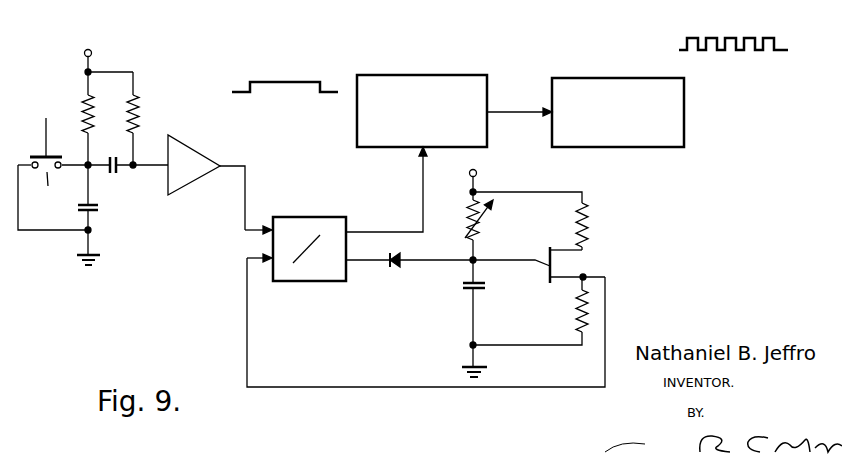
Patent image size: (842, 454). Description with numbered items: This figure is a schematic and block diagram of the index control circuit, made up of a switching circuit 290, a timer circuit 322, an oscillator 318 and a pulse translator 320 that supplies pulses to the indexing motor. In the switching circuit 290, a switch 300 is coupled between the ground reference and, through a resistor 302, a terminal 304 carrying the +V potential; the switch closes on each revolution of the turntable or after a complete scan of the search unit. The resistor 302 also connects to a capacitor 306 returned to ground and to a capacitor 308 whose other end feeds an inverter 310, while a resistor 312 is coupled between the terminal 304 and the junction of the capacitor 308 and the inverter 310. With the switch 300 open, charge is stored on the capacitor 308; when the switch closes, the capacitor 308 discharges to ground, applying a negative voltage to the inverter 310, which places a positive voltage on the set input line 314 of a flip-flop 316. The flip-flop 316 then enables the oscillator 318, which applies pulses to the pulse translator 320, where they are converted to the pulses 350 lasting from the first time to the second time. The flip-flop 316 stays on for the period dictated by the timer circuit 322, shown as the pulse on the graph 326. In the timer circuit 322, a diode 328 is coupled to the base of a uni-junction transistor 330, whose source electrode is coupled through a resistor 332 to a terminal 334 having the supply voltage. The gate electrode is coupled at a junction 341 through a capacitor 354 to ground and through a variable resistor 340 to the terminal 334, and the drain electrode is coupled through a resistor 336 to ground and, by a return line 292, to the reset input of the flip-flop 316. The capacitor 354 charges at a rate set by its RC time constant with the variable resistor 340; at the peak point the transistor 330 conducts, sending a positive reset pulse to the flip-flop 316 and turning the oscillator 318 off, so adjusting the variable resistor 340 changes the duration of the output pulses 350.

The switching circuit 290 is at (57, 260).
The feedback circuit 292 is at (550, 402).
The switch 300 is at (53, 174).
The resistor 302 is at (84, 112).
The terminal 304 is at (92, 51).
The capacitor 306 is at (93, 212).
The capacitor 308 is at (117, 171).
The inverter 310 is at (188, 180).
The resistor 312 is at (137, 112).
The set input line 314 is at (247, 208).
The flip-flop 316 is at (337, 220).
The oscillator 318 is at (435, 73).
The pulse translator 320 is at (678, 130).
The timer circuit 322 is at (453, 328).
The graph 326 is at (283, 80).
The diode 328 is at (398, 268).
The uni-junction transistor 330 is at (567, 263).
The resistor 332 is at (588, 218).
The terminal 334 is at (477, 173).
The resistor 336 is at (592, 305).
The variable resistor 340 is at (496, 241).
The junction 341 is at (471, 257).
The pulses 350 is at (745, 38).
The capacitor 354 is at (483, 289).